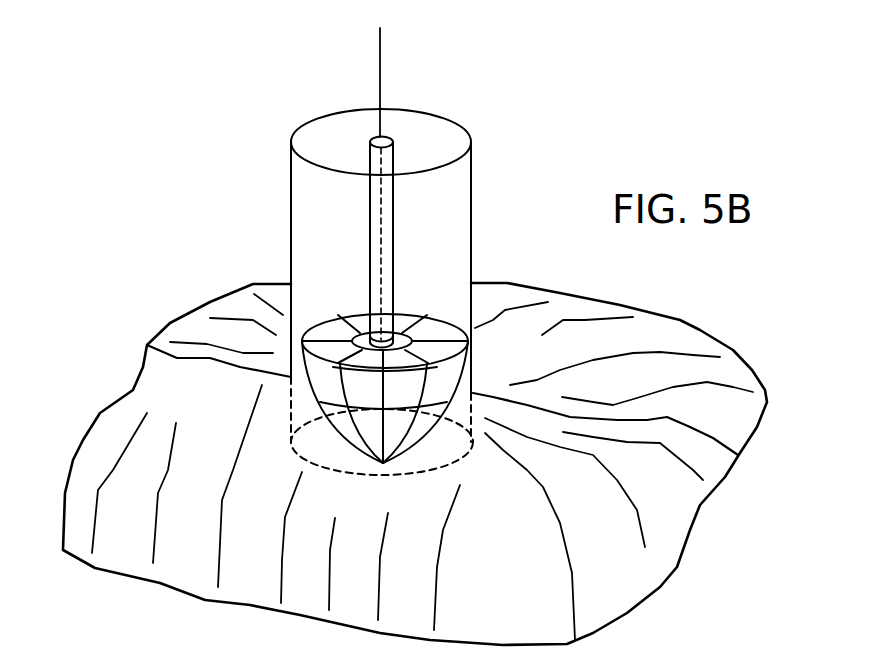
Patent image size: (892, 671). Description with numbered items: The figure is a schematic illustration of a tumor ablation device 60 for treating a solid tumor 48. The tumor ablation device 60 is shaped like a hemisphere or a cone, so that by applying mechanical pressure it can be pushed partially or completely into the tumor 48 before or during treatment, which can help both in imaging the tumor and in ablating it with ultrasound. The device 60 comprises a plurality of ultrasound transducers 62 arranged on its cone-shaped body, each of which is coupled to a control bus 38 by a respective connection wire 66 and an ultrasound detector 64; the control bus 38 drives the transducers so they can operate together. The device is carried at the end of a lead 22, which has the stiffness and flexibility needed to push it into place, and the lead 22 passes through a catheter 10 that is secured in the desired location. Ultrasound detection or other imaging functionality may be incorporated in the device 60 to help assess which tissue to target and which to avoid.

The control bus 38 is at (380, 72).
The catheter 10 is at (471, 178).
The lead 22 is at (393, 232).
The tumor ablation device 60 is at (481, 271).
The ultrasound transducers 62 is at (437, 352).
The ultrasound detector 64 is at (350, 337).
The connection wire 66 is at (393, 334).
The tumor 48 is at (697, 332).